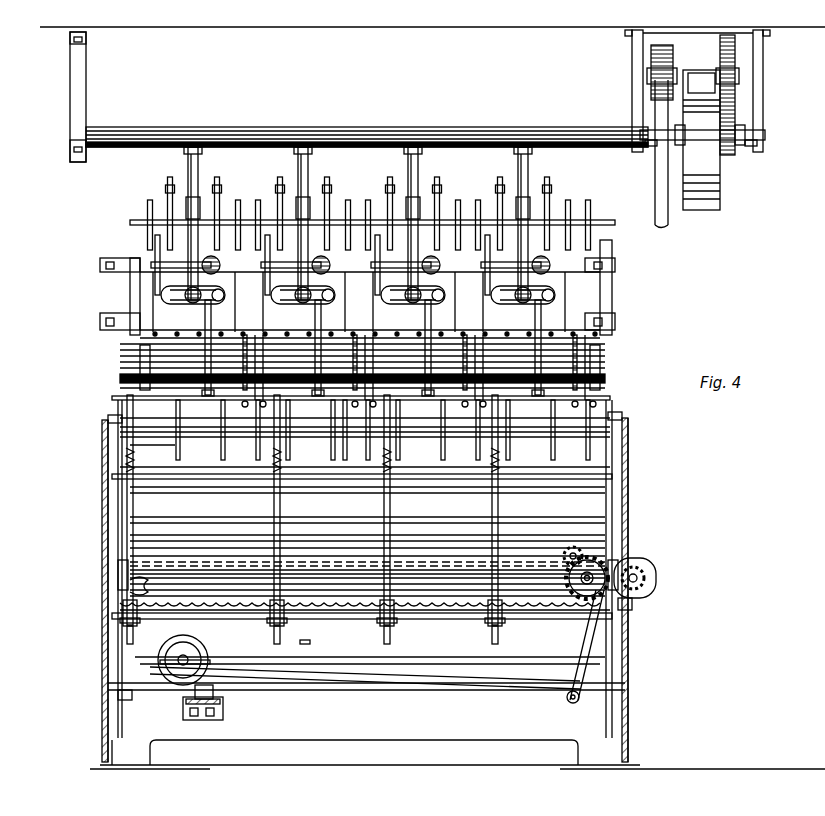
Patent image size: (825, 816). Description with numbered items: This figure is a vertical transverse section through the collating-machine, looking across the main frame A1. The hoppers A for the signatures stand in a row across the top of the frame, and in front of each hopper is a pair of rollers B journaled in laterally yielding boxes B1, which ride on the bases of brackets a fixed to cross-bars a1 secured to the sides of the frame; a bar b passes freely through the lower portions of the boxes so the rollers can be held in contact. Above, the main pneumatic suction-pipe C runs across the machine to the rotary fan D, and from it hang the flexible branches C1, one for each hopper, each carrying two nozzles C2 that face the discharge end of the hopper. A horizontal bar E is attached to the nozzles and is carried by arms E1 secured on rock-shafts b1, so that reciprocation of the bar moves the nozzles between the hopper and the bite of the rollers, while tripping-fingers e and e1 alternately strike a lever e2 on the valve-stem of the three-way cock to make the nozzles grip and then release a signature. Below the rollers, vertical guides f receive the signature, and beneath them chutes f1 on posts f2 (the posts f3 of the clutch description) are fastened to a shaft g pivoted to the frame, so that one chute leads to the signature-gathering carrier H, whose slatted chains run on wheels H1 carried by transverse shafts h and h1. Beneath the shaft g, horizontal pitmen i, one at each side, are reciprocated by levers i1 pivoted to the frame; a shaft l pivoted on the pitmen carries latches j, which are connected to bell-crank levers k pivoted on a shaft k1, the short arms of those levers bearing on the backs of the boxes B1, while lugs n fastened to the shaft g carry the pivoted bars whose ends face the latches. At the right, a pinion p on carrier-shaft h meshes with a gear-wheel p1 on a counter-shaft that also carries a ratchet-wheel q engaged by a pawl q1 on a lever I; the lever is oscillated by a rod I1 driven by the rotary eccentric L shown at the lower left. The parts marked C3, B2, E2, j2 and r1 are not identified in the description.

The main pneumatic suction-pipe C is at (367, 128).
The flexible branch C1 is at (200, 184).
The rotary fan D is at (687, 149).
The tripping-finger e is at (322, 265).
The tripping-finger e1 is at (369, 248).
The lever e2 is at (354, 221).
The bracket a is at (355, 259).
The nozzle C2 is at (390, 296).
The bearing C3 is at (358, 297).
The hopper A is at (370, 302).
The horizontal bar E is at (370, 303).
The roller B is at (361, 358).
The journal-box B1 is at (108, 362).
The roller shaft B2 is at (410, 362).
The arm E1 is at (384, 367).
The rod E2 is at (382, 348).
The main frame A1 is at (104, 447).
The cross-bar a1 is at (362, 439).
The bell-crank lever k is at (134, 410).
The shaft k1 is at (350, 430).
The bar b is at (365, 426).
The rock-shaft b1 is at (419, 425).
The vertical guide f is at (367, 466).
The chute f1 is at (367, 521).
The post f2 is at (367, 583).
The post f3 is at (170, 448).
The signature-gathering carrier H is at (338, 572).
The wheel H1 is at (120, 592).
The transverse shaft h is at (645, 563).
The transverse shaft h1 is at (150, 587).
The shaft g is at (362, 625).
The lug n is at (325, 621).
The latch j is at (307, 640).
The rail j2 is at (370, 579).
The lever i1 is at (370, 650).
The shaft l is at (313, 646).
The rod I1 is at (413, 692).
The lever I is at (578, 646).
The pitman i is at (135, 700).
The rotary eccentric L is at (190, 677).
The arm r1 is at (194, 649).
The ratchet-wheel q is at (555, 582).
The pawl q1 is at (567, 552).
The pinion p is at (656, 573).
The gear-wheel p1 is at (632, 608).